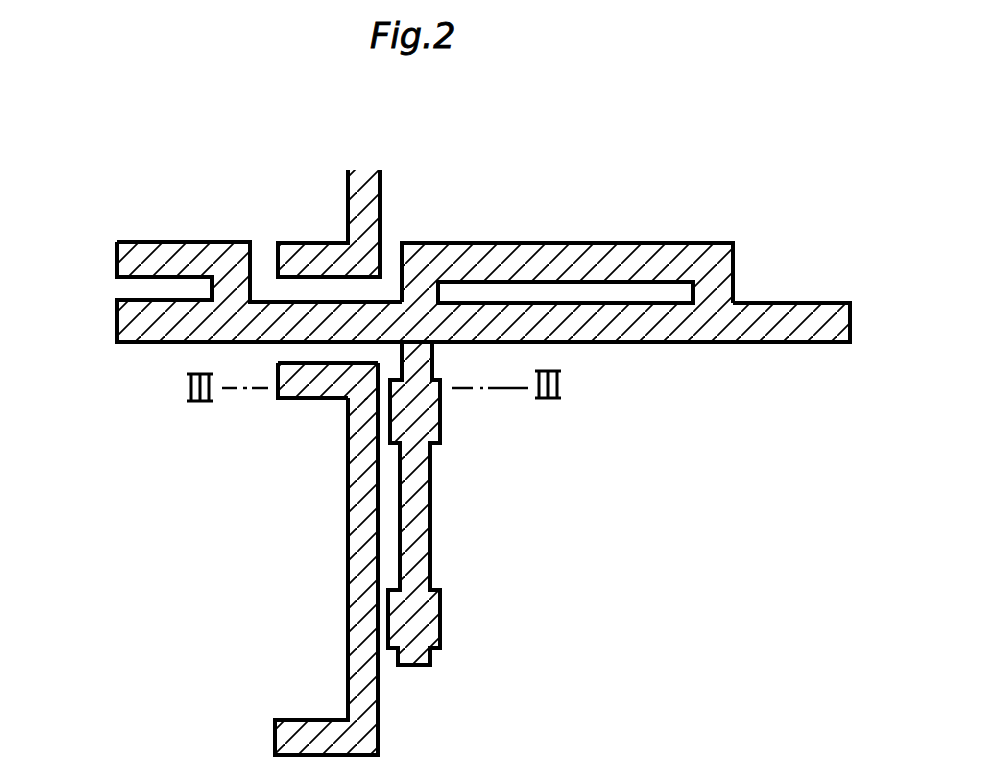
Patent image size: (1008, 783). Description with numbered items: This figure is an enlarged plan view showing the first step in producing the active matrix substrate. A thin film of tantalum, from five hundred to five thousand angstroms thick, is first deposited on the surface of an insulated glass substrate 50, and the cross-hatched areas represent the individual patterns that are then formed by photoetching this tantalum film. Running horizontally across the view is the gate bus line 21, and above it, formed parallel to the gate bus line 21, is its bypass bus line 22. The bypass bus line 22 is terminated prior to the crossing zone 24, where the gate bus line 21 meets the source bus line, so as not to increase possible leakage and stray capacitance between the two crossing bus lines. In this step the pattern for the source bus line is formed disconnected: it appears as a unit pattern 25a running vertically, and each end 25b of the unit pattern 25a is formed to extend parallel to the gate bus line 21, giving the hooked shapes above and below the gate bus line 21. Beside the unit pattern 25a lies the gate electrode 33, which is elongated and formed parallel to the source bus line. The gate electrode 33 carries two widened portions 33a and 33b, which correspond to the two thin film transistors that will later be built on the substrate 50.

The gate bus line 21 is at (603, 325).
The bypass bus line 22 is at (588, 250).
The crossing zone 24 is at (399, 244).
The unit pattern 25a is at (348, 478).
The end of unit pattern 25b is at (306, 243).
The gate electrode 33 is at (428, 512).
The widened portion 33a is at (440, 430).
The widened portion 33b is at (441, 624).
The insulated glass substrate 50 is at (602, 660).